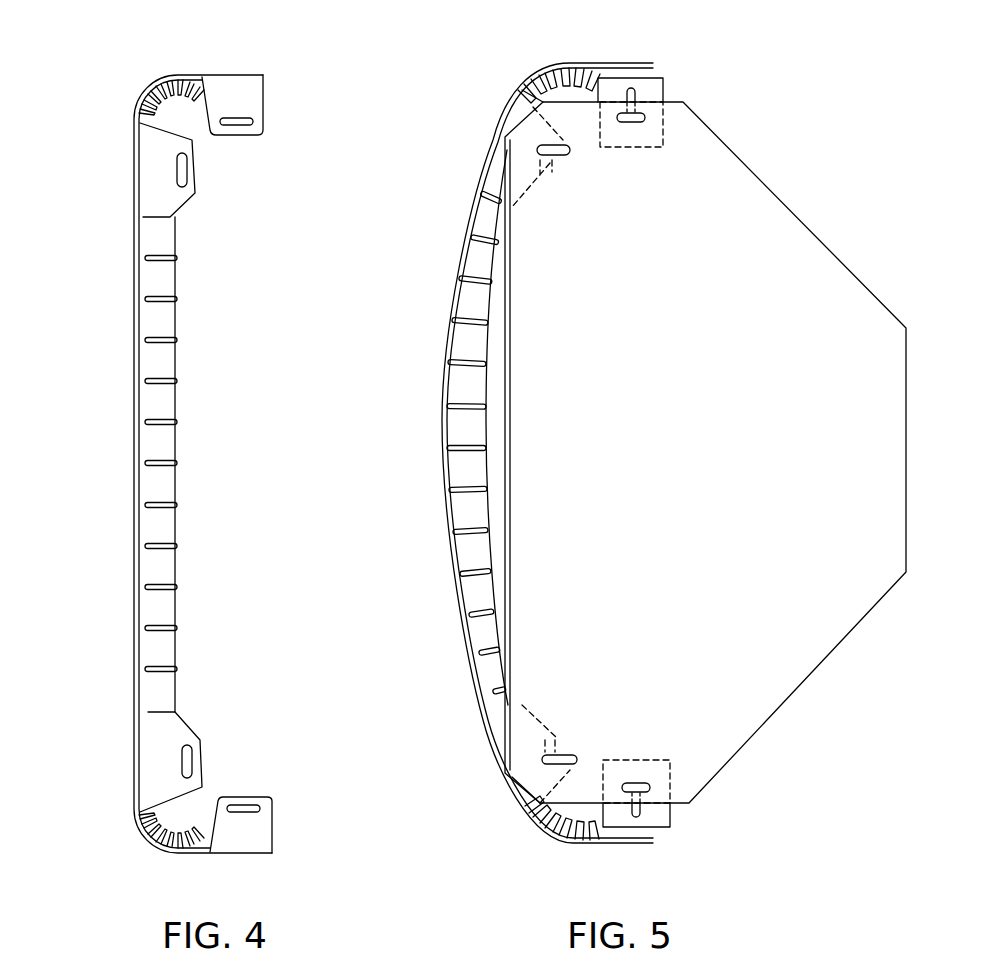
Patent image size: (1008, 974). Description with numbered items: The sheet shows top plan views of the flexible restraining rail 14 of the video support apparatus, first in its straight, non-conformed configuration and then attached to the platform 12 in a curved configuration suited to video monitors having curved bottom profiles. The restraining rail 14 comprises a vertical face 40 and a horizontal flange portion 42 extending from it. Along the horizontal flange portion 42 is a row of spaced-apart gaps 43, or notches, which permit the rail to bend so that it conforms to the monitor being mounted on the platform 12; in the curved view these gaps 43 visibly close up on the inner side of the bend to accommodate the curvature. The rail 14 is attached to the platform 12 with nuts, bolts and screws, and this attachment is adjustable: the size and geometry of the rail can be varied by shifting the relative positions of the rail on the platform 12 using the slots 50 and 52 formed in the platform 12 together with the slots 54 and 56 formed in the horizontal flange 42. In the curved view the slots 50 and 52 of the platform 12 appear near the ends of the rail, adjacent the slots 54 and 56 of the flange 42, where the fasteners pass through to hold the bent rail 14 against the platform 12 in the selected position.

In FIG. 5, the platform 12 is at (795, 215).
In FIG. 4, the flexible restraining rail 14 is at (134, 655).
In FIG. 5, the flexible restraining rail 14 is at (442, 400).
In FIG. 4, the vertical face 40 is at (134, 208).
In FIG. 4, the horizontal flange portion 42 is at (177, 193).
In FIG. 5, the horizontal flange portion 42 is at (473, 512).
In FIG. 4, the gaps 43 is at (175, 383).
In FIG. 5, the gaps 43 is at (478, 408).
In FIG. 5, the slot 50 is at (570, 153).
In FIG. 5, the slot 52 is at (645, 118).
In FIG. 5, the slot 54 is at (553, 172).
In FIG. 5, the slot 56 is at (633, 90).